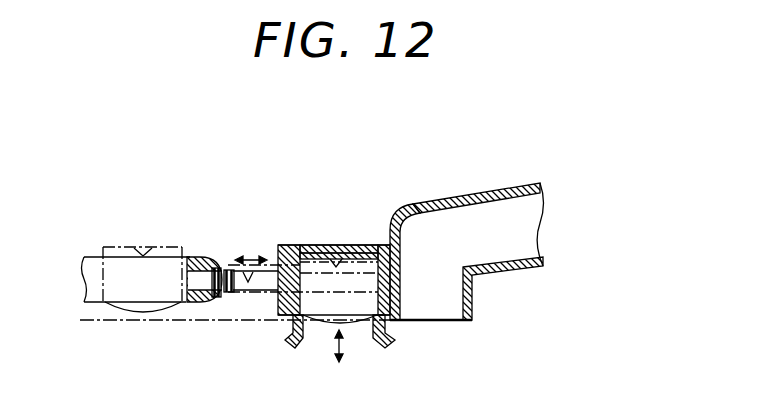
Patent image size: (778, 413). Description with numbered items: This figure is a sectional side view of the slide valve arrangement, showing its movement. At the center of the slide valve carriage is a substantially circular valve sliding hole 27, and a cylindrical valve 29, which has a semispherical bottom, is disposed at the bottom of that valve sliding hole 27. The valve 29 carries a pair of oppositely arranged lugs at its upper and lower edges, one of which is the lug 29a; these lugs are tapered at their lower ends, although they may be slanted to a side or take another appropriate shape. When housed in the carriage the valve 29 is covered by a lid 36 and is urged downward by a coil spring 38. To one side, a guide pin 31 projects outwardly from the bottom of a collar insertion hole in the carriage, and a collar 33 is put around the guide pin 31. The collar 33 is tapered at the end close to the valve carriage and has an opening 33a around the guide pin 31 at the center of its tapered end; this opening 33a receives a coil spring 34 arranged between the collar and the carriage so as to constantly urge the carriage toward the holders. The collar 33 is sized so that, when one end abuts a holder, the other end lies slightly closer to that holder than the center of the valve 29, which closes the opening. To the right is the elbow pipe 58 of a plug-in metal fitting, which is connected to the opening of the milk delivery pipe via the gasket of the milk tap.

The valve sliding hole 27 is at (307, 246).
The cylindrical valve 29 is at (323, 303).
The lug 29a is at (141, 245).
The guide pin 31 is at (227, 291).
The collar 33 is at (198, 256).
The opening 33a is at (219, 268).
The coil spring 34 is at (234, 293).
The lid 36 is at (327, 252).
The coil spring 38 is at (387, 232).
The elbow pipe 58 is at (473, 310).